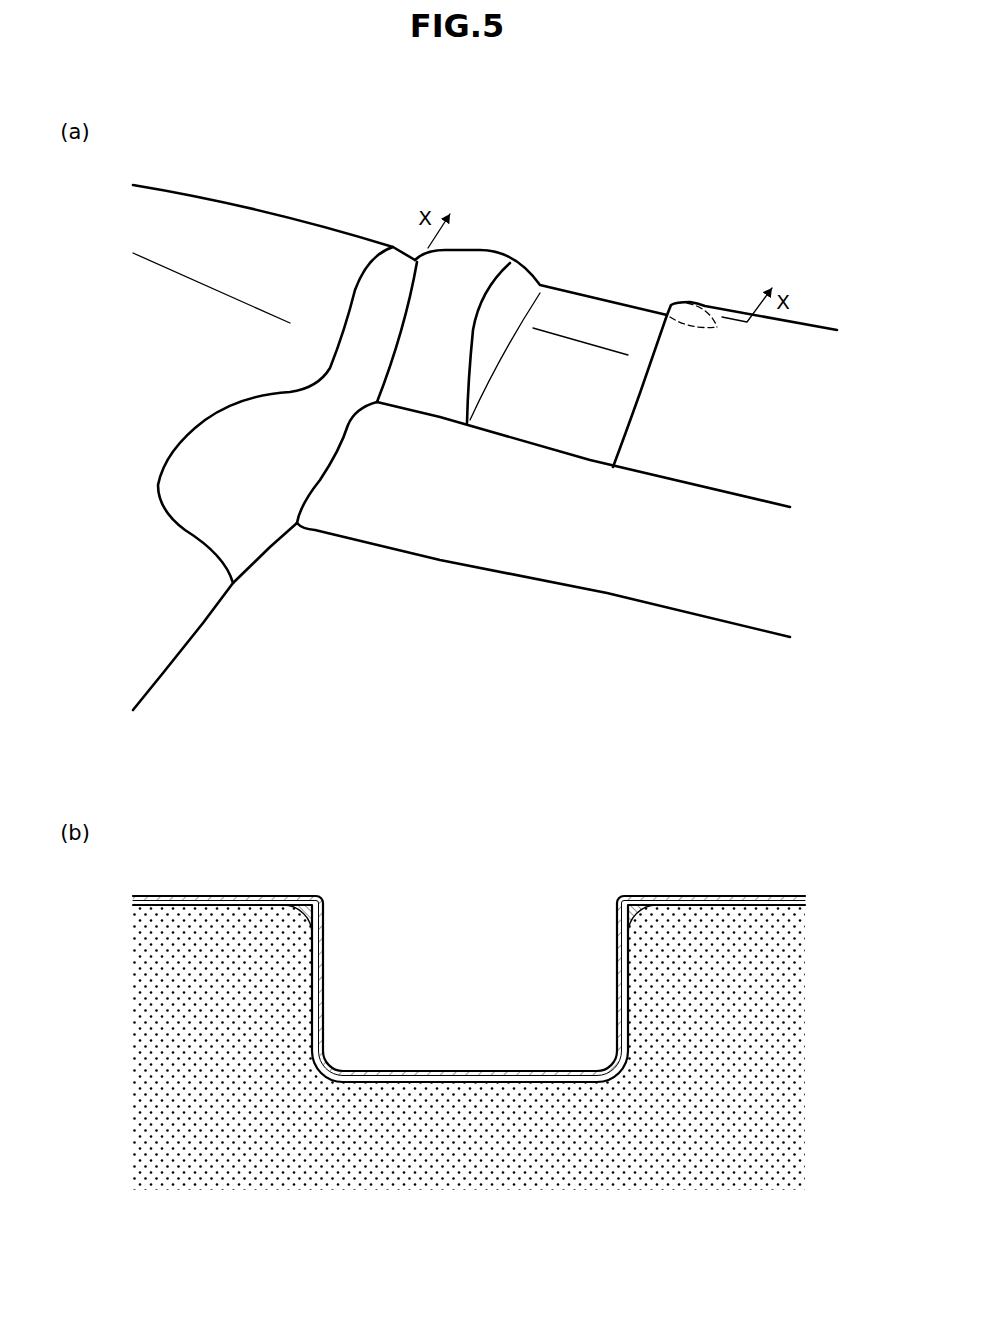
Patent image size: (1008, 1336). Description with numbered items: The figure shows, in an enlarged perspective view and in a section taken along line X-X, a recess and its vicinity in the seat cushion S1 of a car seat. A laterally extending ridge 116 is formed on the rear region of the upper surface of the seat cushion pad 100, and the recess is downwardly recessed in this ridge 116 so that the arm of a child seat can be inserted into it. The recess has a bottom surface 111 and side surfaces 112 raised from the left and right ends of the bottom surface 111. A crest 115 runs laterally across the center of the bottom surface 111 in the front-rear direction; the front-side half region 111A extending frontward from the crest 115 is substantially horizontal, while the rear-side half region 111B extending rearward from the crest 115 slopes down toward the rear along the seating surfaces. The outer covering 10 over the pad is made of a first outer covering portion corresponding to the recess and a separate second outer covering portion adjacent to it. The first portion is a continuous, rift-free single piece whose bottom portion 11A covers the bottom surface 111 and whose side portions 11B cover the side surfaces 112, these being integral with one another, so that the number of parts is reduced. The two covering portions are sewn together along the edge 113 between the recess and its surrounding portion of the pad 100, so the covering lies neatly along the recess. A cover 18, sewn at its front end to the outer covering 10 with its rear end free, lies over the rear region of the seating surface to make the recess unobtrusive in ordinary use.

The seat cushion S1 is at (767, 180).
The rear-side half region 111B is at (603, 320).
The crest 115 is at (603, 347).
The ridge 116 is at (810, 352).
The front-side half region 111A is at (580, 377).
The cover 18 is at (577, 567).
The seat cushion pad 100 is at (520, 1158).
The outer covering 10 is at (469, 950).
The side portions 11B is at (320, 965).
The side surfaces 112 is at (312, 993).
The edge 113 is at (317, 920).
The bottom surface 111 is at (407, 1080).
The bottom portion 11A is at (465, 1075).